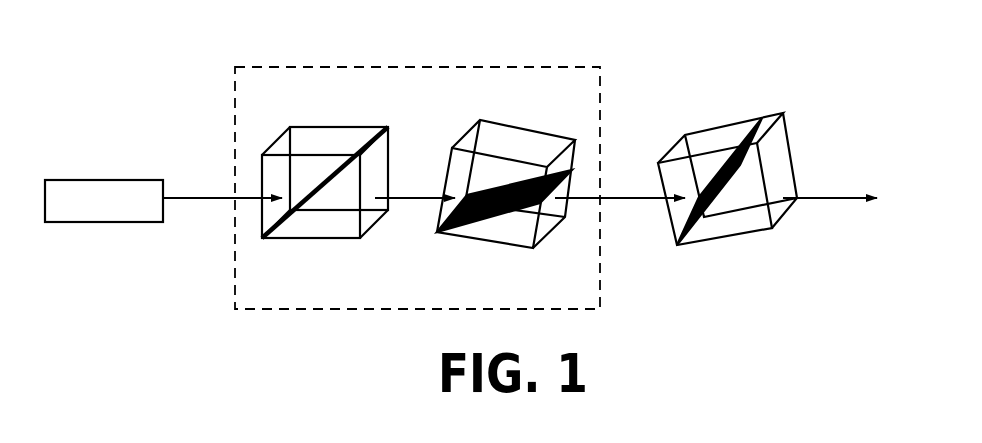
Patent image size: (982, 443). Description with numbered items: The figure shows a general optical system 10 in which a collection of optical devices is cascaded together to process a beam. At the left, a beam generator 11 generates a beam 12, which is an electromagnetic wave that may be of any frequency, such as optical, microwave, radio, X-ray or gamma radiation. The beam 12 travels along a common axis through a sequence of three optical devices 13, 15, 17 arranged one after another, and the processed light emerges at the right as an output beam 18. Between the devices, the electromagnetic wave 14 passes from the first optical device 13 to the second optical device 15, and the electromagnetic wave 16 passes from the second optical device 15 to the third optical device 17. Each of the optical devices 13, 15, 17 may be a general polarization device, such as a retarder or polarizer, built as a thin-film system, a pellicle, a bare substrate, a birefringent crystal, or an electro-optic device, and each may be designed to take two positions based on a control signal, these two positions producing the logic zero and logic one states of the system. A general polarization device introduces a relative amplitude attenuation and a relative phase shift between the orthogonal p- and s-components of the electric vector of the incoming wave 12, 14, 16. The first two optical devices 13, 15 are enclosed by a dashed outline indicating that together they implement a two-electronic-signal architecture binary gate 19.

The optical system 10 is at (113, 52).
The beam generator 11 is at (130, 178).
The beam 12 is at (212, 196).
The optical device 13 is at (340, 124).
The electromagnetic wave 14 is at (413, 196).
The optical device 15 is at (510, 123).
The electromagnetic wave 16 is at (642, 193).
The optical device 17 is at (740, 122).
The output beam 18 is at (835, 193).
The two-electronic-signal (TES) architecture binary gate 19 is at (307, 66).